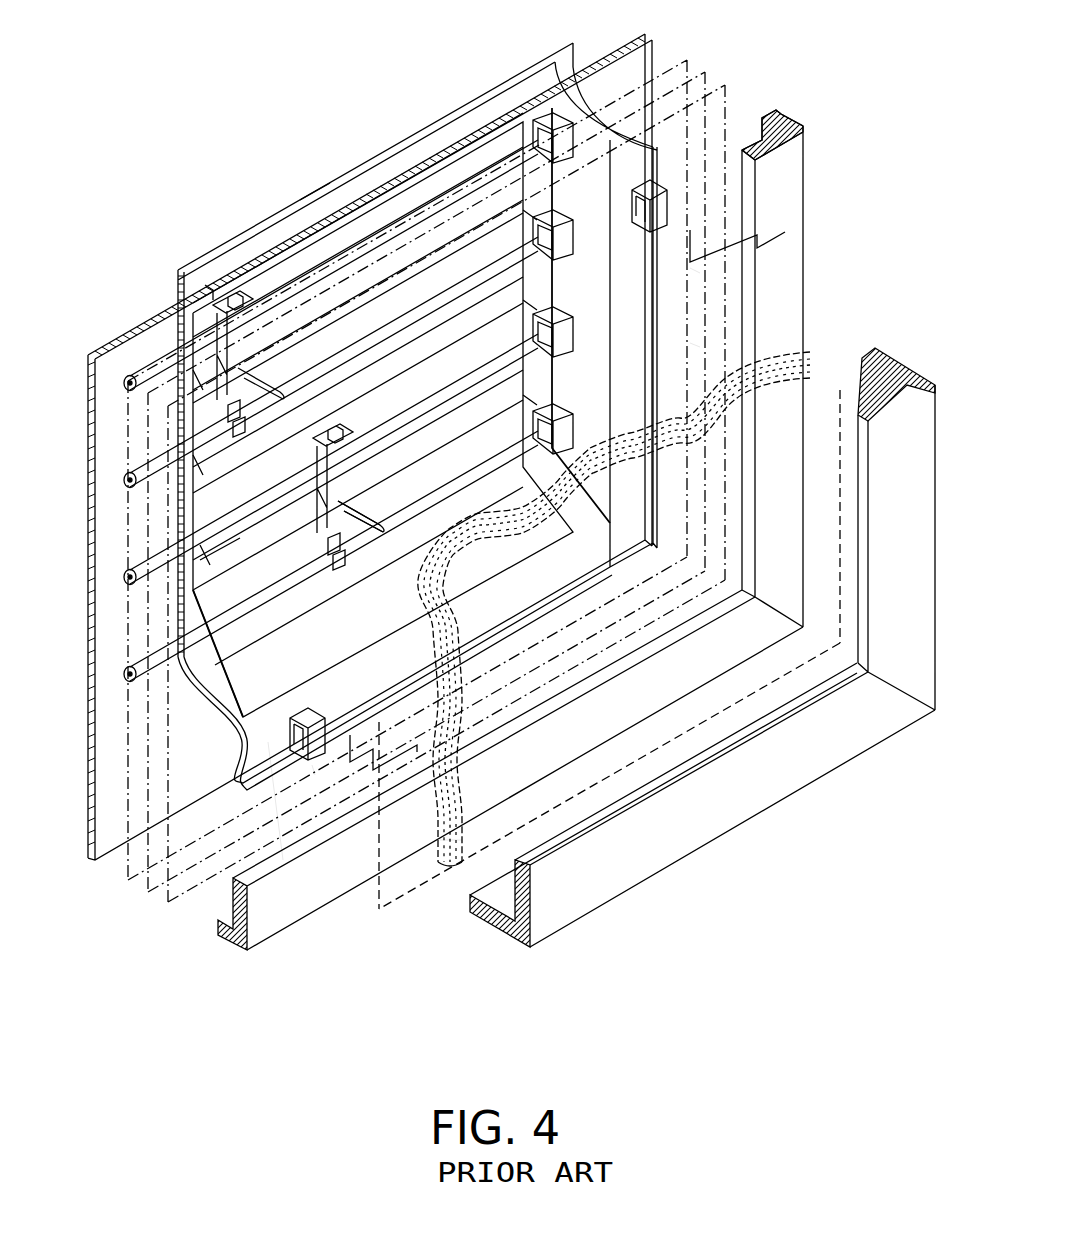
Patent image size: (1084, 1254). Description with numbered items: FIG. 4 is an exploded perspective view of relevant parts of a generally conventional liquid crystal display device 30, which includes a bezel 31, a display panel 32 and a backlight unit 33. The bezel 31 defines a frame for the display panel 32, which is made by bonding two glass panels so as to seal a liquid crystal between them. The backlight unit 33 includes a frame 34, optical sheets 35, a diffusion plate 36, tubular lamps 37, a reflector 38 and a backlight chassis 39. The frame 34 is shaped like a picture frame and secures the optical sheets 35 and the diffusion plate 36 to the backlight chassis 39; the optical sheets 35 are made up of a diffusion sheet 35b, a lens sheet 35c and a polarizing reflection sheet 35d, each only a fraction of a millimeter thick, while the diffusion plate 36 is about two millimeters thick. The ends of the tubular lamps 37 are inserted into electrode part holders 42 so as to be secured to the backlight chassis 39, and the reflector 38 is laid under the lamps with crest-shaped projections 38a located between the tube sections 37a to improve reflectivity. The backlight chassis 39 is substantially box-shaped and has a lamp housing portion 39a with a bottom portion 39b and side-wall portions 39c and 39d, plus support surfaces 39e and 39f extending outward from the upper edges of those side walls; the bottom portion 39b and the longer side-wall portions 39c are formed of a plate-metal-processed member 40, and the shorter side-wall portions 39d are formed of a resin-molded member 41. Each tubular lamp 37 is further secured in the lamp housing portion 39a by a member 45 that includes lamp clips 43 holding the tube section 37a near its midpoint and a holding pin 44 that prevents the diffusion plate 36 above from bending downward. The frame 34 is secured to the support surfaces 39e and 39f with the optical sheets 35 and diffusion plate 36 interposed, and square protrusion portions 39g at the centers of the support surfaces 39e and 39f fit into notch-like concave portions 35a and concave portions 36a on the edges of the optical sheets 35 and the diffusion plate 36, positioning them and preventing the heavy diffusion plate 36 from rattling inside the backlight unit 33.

The liquid crystal display device 30 is at (809, 943).
The bezel 31 is at (583, 917).
The display panel 32 is at (440, 855).
The backlight unit 33 is at (577, 22).
The frame 34 is at (270, 937).
The optical sheets 35 is at (106, 982).
The concave portions 35a is at (700, 238).
The diffusion sheet 35b is at (170, 905).
The lens sheet 35c is at (148, 895).
The polarizing reflection sheet 35d is at (128, 882).
The diffusion plate 36 is at (103, 866).
The concave portions 36a is at (653, 200).
The tubular lamps 37 is at (317, 577).
The tube section 37a is at (355, 555).
The reflector 38 is at (150, 627).
The projections 38a is at (230, 580).
The backlight chassis 39 is at (342, 138).
The lamp housing portion 39a is at (700, 347).
The bottom portion 39b is at (281, 210).
The side-wall portions 39c is at (197, 700).
The side-wall portions 39d is at (557, 58).
The support surface 39e is at (268, 742).
The support surface 39f is at (700, 273).
The protrusion portions 39g is at (700, 215).
The member 40 is at (405, 700).
The member 41 is at (582, 310).
The electrode part holders 42 is at (547, 127).
The lamp clips 43 is at (210, 287).
The holding pin 44 is at (230, 410).
The member 45 is at (210, 322).